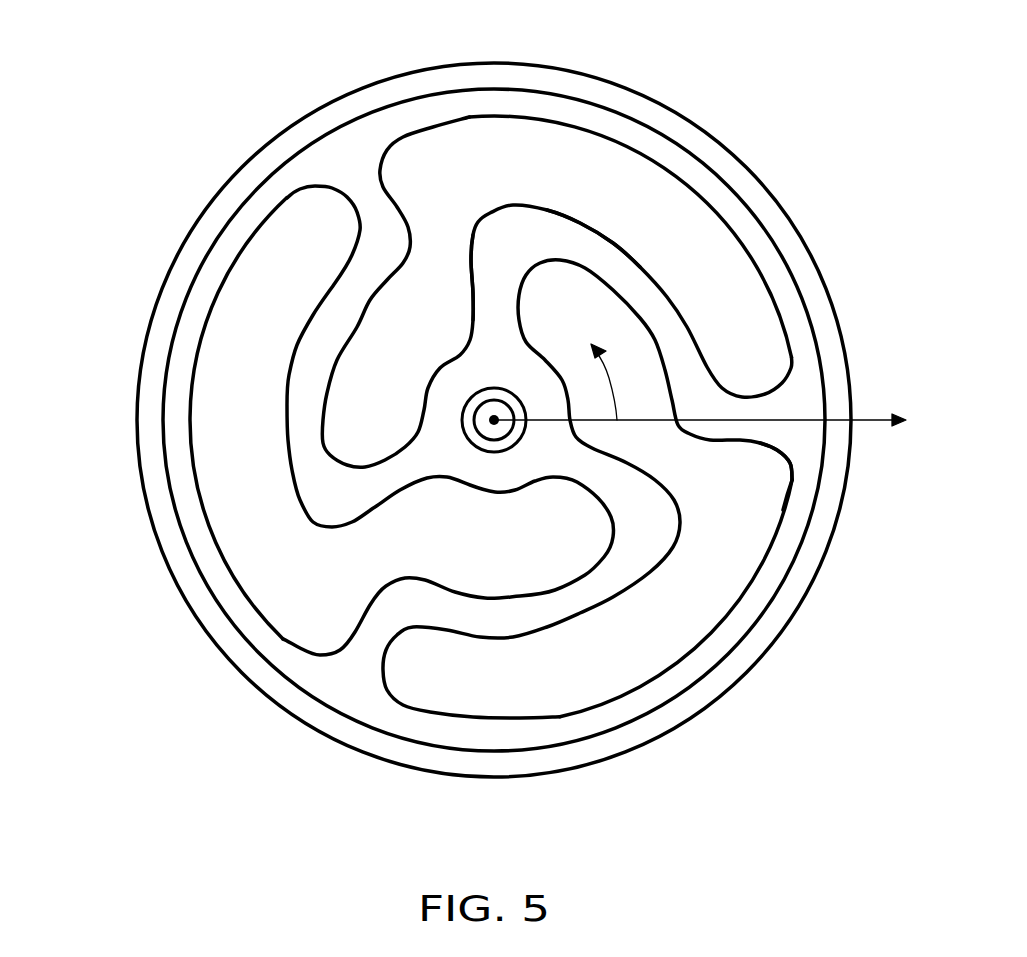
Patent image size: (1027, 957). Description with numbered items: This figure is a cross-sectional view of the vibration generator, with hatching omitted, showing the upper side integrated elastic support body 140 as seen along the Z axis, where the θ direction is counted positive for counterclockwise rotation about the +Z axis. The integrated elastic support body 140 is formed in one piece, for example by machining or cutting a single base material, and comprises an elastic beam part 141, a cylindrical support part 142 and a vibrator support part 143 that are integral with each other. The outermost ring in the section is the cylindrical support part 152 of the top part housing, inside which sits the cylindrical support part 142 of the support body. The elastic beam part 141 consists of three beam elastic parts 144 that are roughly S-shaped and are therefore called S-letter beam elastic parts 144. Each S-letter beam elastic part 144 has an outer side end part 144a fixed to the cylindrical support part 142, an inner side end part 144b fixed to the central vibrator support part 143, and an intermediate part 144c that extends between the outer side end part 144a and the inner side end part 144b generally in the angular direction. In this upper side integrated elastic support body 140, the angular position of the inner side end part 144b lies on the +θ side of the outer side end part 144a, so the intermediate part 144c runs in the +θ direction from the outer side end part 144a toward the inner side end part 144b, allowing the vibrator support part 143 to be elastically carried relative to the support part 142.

The upper side integrated elastic support body 140 is at (232, 140).
The elastic beam part 141 is at (538, 198).
The cylindrical support part 142 is at (167, 455).
The vibrator support part 143 is at (498, 468).
The S-letter beam elastic part 144 is at (650, 290).
The outer side end part 144a is at (776, 476).
The inner side end part 144b is at (490, 293).
The intermediate part 144c is at (587, 237).
The cylindrical support part 152 is at (145, 352).